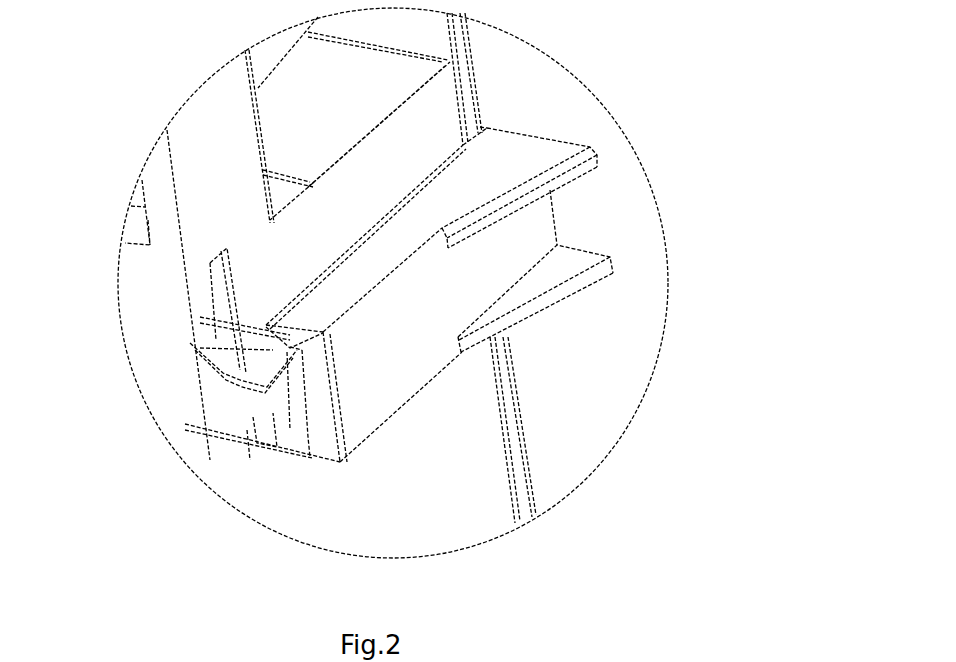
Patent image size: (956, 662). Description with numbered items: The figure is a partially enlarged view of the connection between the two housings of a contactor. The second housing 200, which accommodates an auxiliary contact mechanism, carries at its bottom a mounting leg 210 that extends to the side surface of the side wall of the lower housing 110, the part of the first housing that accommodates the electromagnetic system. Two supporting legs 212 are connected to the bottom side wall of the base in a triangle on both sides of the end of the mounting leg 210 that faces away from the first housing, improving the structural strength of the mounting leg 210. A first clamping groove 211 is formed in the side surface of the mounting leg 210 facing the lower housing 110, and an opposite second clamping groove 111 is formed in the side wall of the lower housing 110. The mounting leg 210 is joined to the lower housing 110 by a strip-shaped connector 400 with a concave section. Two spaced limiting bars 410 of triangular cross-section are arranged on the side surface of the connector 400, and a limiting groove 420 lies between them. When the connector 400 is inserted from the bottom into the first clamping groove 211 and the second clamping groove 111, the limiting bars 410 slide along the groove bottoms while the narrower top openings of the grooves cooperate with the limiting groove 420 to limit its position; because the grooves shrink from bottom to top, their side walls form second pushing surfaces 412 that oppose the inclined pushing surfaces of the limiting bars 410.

The lower housing 110 is at (354, 527).
The second clamping groove 111 is at (200, 425).
The second housing 200 is at (555, 453).
The mounting leg 210 is at (395, 385).
The first clamping groove 211 is at (308, 383).
The supporting leg 212 is at (530, 165).
The connector 400 is at (258, 415).
The limiting bar 410 is at (190, 375).
The second pushing surface 412 is at (200, 317).
The limiting groove 420 is at (235, 425).